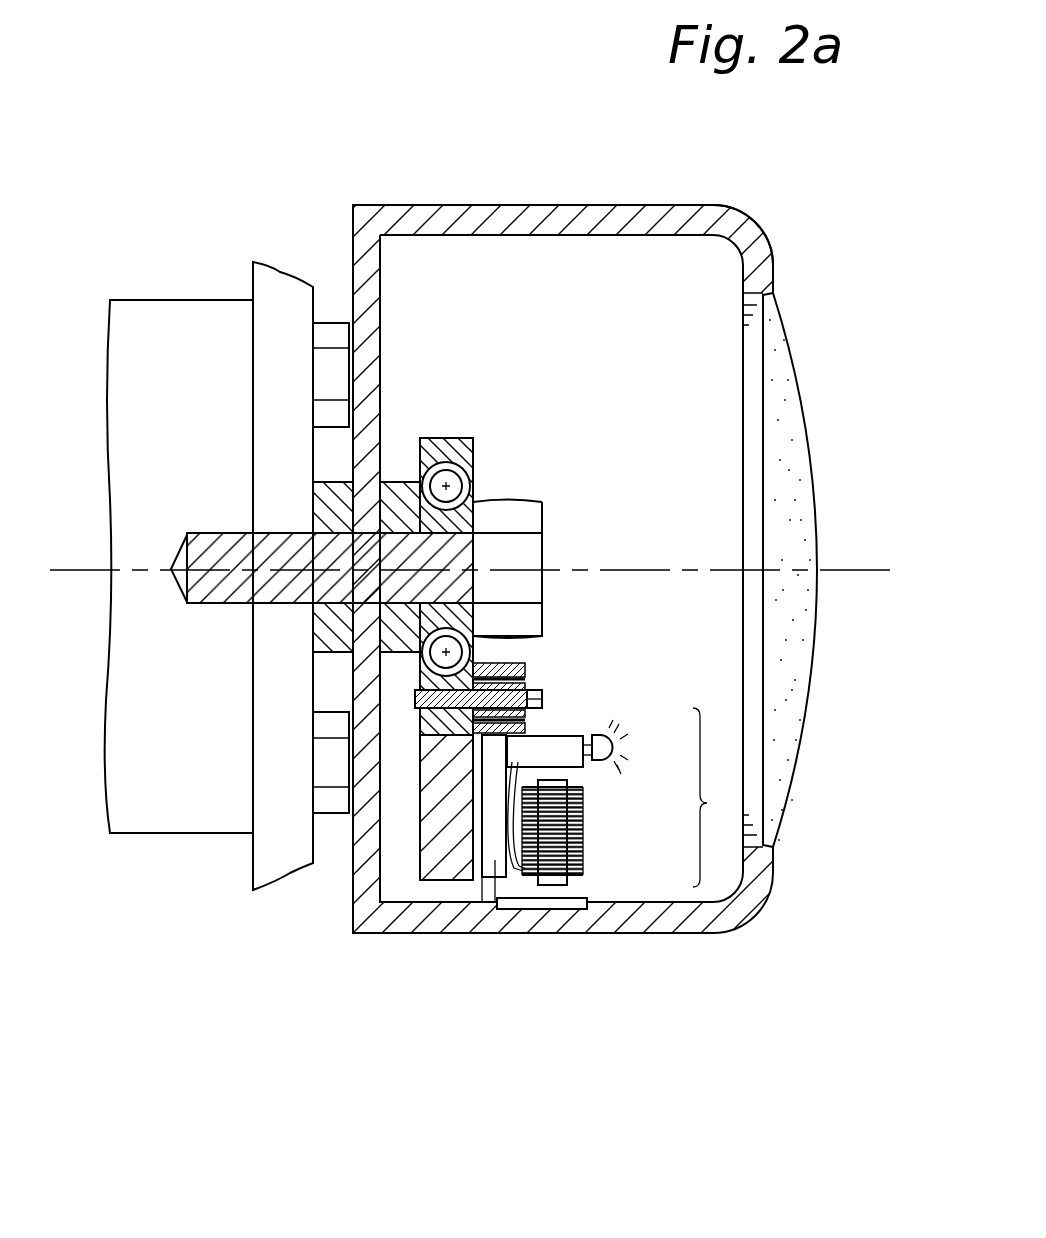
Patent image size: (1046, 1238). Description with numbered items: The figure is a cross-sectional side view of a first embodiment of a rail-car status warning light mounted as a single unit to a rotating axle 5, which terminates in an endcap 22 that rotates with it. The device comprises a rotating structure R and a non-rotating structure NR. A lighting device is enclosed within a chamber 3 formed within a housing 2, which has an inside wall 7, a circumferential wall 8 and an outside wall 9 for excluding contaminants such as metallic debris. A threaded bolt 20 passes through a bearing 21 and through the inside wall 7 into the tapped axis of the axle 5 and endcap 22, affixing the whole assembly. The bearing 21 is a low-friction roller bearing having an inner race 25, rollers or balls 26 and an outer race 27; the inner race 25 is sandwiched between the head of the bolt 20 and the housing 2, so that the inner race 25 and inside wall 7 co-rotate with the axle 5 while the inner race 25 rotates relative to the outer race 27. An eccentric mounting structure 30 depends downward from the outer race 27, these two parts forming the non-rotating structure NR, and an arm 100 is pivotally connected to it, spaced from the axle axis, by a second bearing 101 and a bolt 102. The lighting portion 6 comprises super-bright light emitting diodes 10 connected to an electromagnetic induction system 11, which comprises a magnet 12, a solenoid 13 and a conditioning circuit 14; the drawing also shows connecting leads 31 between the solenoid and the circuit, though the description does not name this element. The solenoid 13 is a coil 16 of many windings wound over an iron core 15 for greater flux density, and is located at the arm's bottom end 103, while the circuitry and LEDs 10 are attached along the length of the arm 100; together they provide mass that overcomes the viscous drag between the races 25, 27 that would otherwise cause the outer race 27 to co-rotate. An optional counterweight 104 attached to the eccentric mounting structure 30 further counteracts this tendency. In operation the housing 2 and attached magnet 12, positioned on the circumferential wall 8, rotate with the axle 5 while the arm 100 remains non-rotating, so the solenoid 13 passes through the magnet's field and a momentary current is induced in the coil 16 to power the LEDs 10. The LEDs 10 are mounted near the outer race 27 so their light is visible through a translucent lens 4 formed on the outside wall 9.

The rotating structure R is at (535, 205).
The housing 2 is at (713, 205).
The chamber 3 is at (624, 394).
The translucent lens 4 is at (803, 432).
The rotating axle 5 is at (137, 300).
The lighting portion 6 is at (708, 797).
The inside wall 7 is at (383, 307).
The circumferential wall 8 is at (465, 900).
The outside wall 9 is at (743, 272).
The light emitting diodes 10 is at (623, 735).
The electromagnetic induction system 11 is at (575, 870).
The magnet 12 is at (505, 905).
The solenoid 13 is at (575, 817).
The conditioning circuit 14 is at (557, 735).
The iron core 15 is at (555, 885).
The coil 16 is at (580, 847).
The threaded bolt 20 is at (545, 530).
The bearing 21 is at (480, 445).
The endcap 22 is at (275, 283).
The inner race 25 is at (540, 502).
The rollers or balls 26 is at (428, 470).
The outer race 27 is at (433, 482).
The eccentric mounting structure 30 is at (420, 712).
The connecting wires 31 is at (515, 777).
The arm 100 is at (488, 905).
The second bearing 101 is at (530, 667).
The bolt 102 is at (545, 698).
The arm's bottom end 103 is at (495, 902).
The counterweight 104 is at (447, 880).
The non-rotating structure NR is at (480, 663).